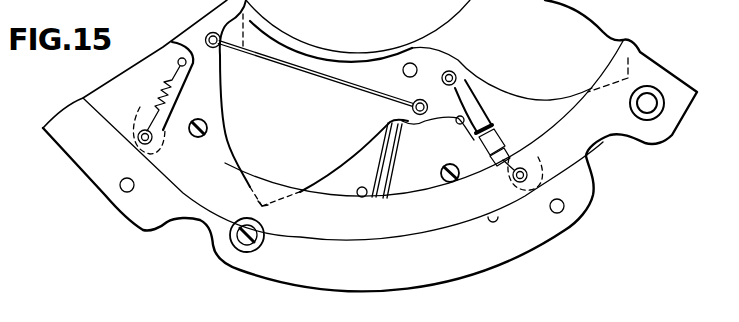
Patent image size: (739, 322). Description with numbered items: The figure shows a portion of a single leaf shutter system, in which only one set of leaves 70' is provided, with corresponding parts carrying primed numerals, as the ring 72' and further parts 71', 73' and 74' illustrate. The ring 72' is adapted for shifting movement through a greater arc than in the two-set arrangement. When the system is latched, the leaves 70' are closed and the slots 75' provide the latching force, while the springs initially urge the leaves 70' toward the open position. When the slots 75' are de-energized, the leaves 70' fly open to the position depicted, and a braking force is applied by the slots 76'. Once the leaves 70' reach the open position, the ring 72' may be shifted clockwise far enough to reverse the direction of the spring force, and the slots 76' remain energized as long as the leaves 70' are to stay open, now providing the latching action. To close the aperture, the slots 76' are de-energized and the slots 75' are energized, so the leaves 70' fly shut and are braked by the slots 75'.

The leaves 70' is at (384, 103).
The pivot hole 71' is at (398, 40).
The ring 72' is at (370, 145).
The pivot pin 73' is at (287, 155).
The latch arm with spring 74' is at (327, 106).
The slots 75' is at (393, 160).
The slots 76' is at (428, 157).